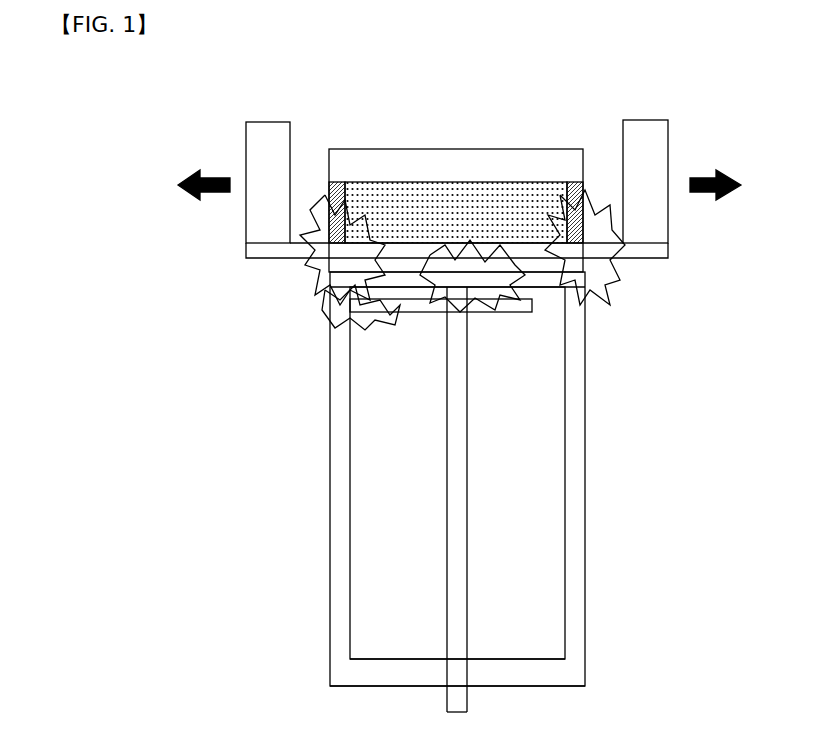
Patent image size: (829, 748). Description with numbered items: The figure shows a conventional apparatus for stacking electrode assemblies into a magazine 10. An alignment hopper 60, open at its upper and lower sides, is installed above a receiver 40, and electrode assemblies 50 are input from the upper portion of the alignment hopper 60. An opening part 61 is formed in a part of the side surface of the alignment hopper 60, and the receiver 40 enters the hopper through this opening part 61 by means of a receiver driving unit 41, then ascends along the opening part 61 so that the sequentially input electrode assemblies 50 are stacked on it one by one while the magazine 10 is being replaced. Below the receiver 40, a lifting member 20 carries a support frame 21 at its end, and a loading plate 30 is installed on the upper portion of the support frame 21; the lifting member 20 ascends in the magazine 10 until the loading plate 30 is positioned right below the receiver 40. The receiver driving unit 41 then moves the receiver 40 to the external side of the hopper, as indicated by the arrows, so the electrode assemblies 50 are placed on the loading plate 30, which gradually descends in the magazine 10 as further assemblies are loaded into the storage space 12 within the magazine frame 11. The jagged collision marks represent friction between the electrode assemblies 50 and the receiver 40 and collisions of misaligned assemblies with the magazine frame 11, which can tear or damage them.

The magazine 10 is at (505, 492).
The magazine frame 11 is at (575, 395).
The storage space 12 is at (555, 543).
The lifting member 20 is at (458, 470).
The support frame 21 is at (398, 307).
The loading plate 30 is at (451, 273).
The receiver 40 is at (275, 255).
The receiver driving unit 41 is at (655, 145).
The electrode assembly 50 is at (503, 188).
The alignment hopper 60 is at (437, 196).
The opening part 61 is at (436, 184).